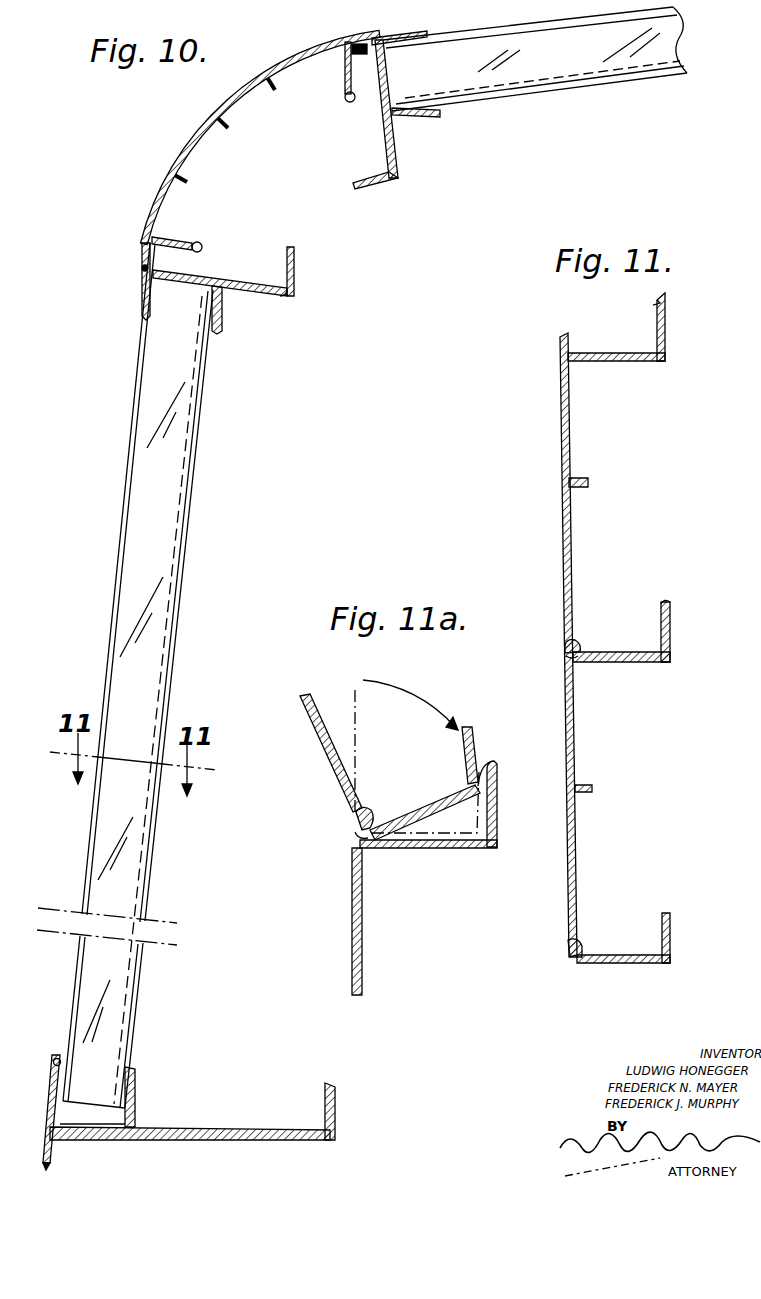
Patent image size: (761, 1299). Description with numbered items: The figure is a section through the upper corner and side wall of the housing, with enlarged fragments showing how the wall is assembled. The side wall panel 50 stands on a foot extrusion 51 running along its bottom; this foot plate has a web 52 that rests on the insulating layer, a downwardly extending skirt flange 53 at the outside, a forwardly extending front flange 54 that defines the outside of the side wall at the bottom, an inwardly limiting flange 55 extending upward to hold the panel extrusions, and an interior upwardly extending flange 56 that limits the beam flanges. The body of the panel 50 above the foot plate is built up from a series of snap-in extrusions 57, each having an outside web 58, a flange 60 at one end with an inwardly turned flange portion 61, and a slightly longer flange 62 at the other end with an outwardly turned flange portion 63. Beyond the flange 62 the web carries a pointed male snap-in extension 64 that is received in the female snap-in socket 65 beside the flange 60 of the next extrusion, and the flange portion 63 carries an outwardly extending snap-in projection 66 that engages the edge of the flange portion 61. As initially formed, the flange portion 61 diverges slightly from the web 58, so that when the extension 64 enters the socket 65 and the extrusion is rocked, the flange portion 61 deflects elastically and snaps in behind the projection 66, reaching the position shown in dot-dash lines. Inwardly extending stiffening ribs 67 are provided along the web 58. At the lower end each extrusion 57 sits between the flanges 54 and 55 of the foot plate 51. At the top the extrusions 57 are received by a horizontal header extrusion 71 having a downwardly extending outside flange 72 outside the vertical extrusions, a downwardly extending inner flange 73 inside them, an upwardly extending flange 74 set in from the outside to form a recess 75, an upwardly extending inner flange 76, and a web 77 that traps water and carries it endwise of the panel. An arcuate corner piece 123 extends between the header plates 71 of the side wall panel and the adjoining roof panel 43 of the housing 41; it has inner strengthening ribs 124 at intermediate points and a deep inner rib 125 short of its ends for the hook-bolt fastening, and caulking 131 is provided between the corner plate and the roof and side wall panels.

In FIG. 10, the wall panel assembly 41 is at (104, 659).
In FIG. 11, the wall panel assembly 41 is at (556, 529).
In FIG. 10, the panel 43 is at (528, 103).
In FIG. 10, the panel 50 is at (113, 553).
In FIG. 10, the foot extrusion 51 is at (50, 1103).
In FIG. 10, the web 52 is at (203, 1127).
In FIG. 10, the skirt flange 53 is at (45, 1165).
In FIG. 10, the front flange 54 is at (54, 1056).
In FIG. 10, the inwardly limiting flange 55 is at (136, 1077).
In FIG. 10, the interior upwardly extending flange 56 is at (335, 1087).
In FIG. 10, the snap-in extrusion 57 is at (165, 626).
In FIG. 11, the snap-in extrusion 57 is at (568, 442).
In FIG. 11, the web 58 is at (569, 548).
In FIG. 11A, the web 58 is at (313, 738).
In FIG. 11, the flange 60 is at (596, 652).
In FIG. 11A, the flange 60 is at (428, 806).
In FIG. 11, the inwardly turned flange portion 61 is at (662, 603).
In FIG. 11A, the inwardly turned flange portion 61 is at (467, 726).
In FIG. 11, the flange 62 is at (627, 664).
In FIG. 11A, the flange 62 is at (436, 847).
In FIG. 11, the outwardly turned flange portion 63 is at (671, 640).
In FIG. 11A, the outwardly turned flange portion 63 is at (496, 810).
In FIG. 11, the male snap-in extension 64 is at (566, 656).
In FIG. 11A, the male snap-in extension 64 is at (356, 833).
In FIG. 11, the female snap-in socket 65 is at (572, 643).
In FIG. 11A, the female snap-in socket 65 is at (363, 815).
In FIG. 11, the snap-in projection 66 is at (668, 600).
In FIG. 11A, the snap-in projection 66 is at (484, 760).
In FIG. 11, the stiffening rib 67 is at (589, 484).
In FIG. 10, the header extrusion 71 is at (394, 157).
In FIG. 10, the outside flange 72 is at (400, 40).
In FIG. 10, the inner flange 73 is at (422, 115).
In FIG. 10, the upwardly extending flange 74 is at (157, 262).
In FIG. 10, the recess 75 is at (142, 270).
In FIG. 10, the upwardly extending inner flange 76 is at (295, 264).
In FIG. 10, the web 77 is at (267, 294).
In FIG. 10, the arcuate corner piece 123 is at (226, 111).
In FIG. 10, the inner strengthening rib 124 is at (228, 130).
In FIG. 10, the deep inner rib 125 is at (343, 77).
In FIG. 10, the caulking 131 is at (360, 46).